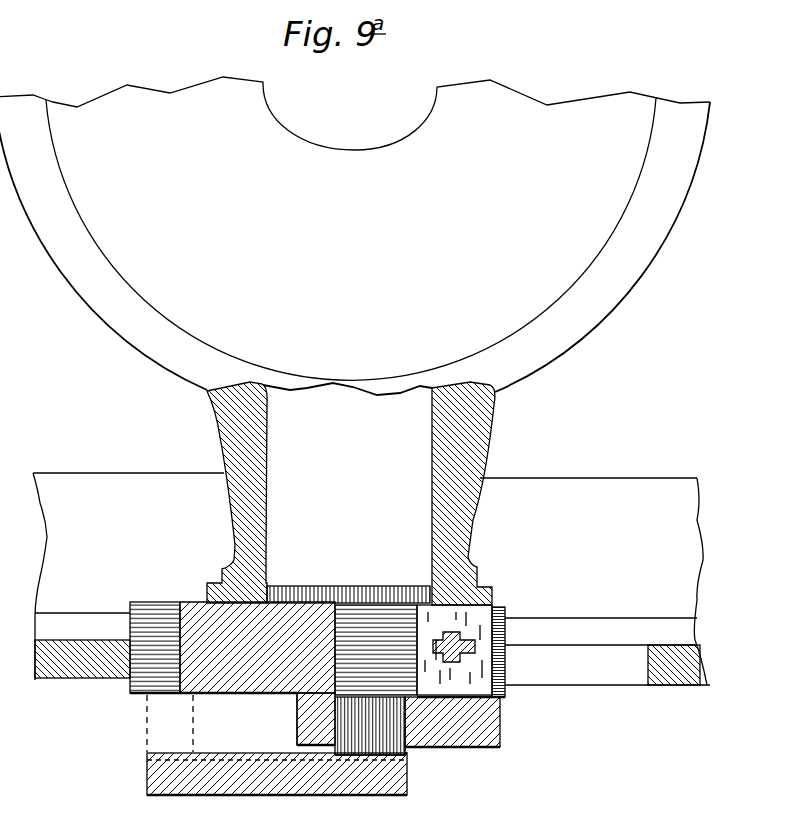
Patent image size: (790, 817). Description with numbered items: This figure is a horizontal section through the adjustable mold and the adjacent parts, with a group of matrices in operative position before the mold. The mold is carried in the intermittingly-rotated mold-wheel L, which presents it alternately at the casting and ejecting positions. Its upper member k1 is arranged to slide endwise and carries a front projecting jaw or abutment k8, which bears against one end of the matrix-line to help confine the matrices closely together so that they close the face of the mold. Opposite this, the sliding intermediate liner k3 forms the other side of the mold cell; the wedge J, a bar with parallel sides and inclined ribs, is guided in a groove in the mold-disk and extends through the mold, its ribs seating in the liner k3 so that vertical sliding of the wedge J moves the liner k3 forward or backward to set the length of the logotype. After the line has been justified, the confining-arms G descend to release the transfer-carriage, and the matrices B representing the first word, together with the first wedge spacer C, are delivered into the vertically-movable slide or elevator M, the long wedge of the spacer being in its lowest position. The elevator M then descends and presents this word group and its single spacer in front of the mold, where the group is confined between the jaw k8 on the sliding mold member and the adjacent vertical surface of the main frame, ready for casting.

The mold-wheel L is at (644, 498).
The wedge J is at (455, 643).
The upper sliding member of the mold k1 is at (232, 673).
The front projecting jaw or abutment k8 is at (305, 707).
The sliding intermediate liner k3 is at (500, 700).
The confining-arms G is at (482, 731).
The wedge spacers C is at (479, 745).
The matrices B is at (407, 752).
The vertically-movable slide or elevator M is at (200, 790).